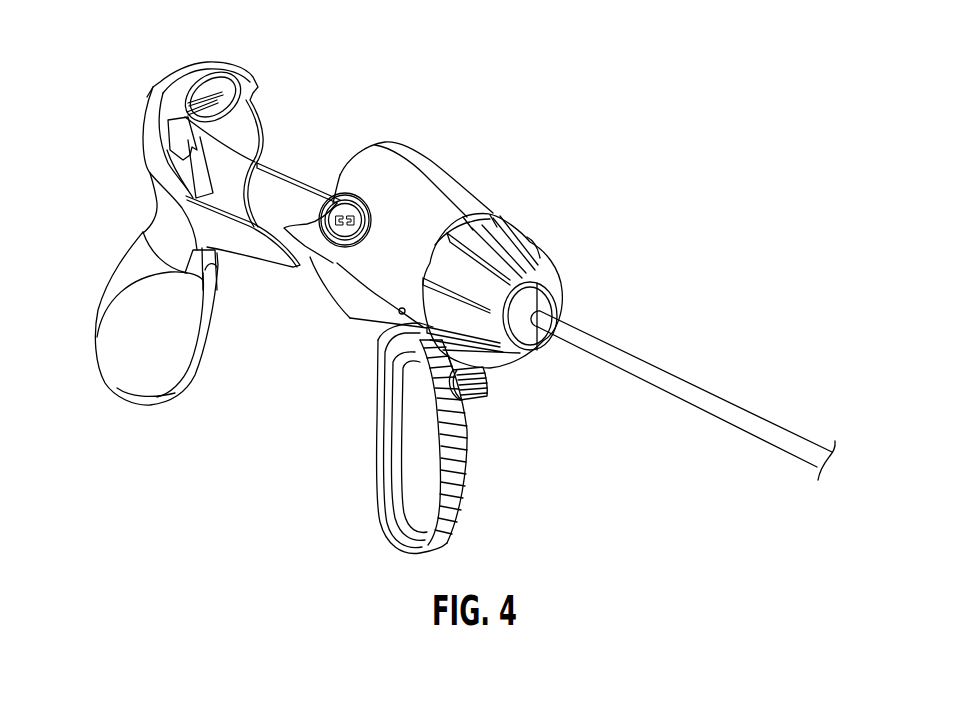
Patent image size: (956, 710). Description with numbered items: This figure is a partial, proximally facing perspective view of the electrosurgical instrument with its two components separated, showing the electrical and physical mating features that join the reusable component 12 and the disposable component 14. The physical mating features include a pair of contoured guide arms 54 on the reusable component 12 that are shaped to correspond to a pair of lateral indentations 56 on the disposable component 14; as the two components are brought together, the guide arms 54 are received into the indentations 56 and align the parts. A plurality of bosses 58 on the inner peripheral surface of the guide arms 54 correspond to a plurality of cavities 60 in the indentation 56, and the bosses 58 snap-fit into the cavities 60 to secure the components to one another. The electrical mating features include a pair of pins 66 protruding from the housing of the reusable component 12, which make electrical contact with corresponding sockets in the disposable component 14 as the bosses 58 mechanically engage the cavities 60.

The reusable component 12 is at (219, 210).
The disposable component 14 is at (559, 346).
The contoured guide arms 54 is at (276, 163).
The lateral indentations 56 is at (358, 320).
The bosses 58 is at (296, 271).
The cavities 60 is at (399, 314).
The pins 66 is at (233, 100).